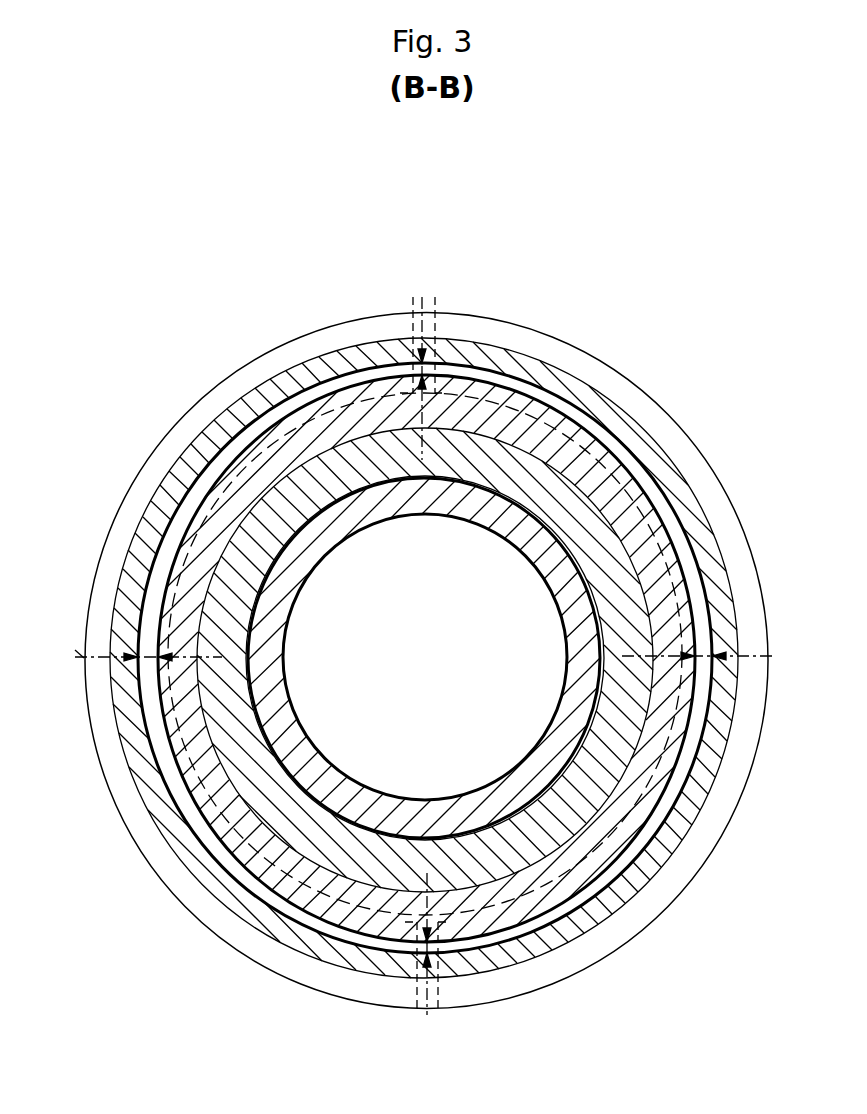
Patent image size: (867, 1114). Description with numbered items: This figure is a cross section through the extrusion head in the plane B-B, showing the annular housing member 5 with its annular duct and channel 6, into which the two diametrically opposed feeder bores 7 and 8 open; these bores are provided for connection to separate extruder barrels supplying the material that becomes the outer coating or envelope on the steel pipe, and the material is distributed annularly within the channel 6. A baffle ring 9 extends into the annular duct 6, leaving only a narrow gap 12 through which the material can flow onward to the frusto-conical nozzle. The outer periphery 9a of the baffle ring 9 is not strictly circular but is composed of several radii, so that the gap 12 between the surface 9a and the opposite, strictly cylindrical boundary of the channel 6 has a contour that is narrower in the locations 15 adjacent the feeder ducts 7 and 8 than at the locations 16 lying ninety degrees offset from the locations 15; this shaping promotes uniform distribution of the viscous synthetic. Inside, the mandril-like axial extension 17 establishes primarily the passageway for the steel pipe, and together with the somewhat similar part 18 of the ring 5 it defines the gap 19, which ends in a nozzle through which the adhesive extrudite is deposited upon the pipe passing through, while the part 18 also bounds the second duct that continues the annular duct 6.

The annular housing member 5 is at (517, 368).
The annular duct and channel 6 is at (575, 415).
The feeder bore 7 is at (432, 995).
The feeder bore 8 is at (427, 328).
The baffle ring 9 is at (350, 420).
The outer periphery 9a is at (617, 460).
The gap 12 is at (260, 437).
The locations adjacent the feeder ducts 15 is at (435, 366).
The locations offset from the feeder ducts 16 is at (138, 660).
The axial extension 17 is at (490, 810).
The part of the ring 18 is at (247, 537).
The gap 19 is at (538, 823).